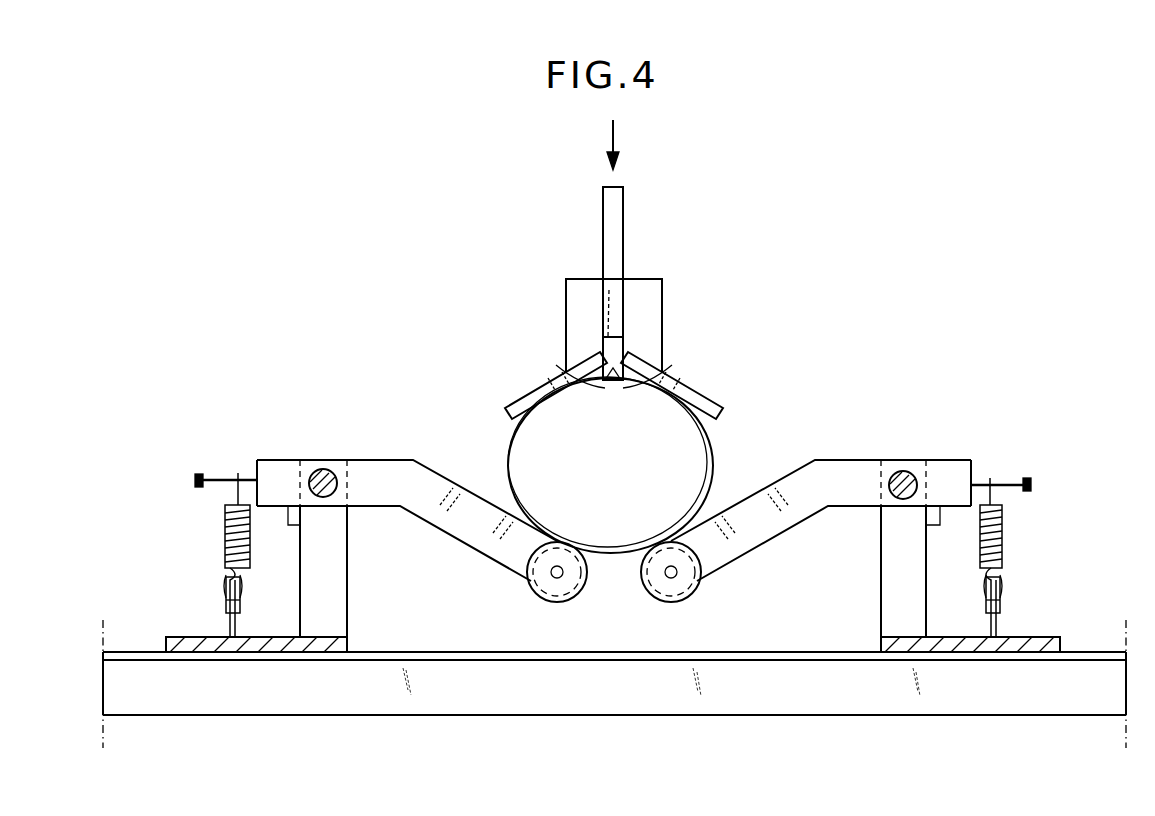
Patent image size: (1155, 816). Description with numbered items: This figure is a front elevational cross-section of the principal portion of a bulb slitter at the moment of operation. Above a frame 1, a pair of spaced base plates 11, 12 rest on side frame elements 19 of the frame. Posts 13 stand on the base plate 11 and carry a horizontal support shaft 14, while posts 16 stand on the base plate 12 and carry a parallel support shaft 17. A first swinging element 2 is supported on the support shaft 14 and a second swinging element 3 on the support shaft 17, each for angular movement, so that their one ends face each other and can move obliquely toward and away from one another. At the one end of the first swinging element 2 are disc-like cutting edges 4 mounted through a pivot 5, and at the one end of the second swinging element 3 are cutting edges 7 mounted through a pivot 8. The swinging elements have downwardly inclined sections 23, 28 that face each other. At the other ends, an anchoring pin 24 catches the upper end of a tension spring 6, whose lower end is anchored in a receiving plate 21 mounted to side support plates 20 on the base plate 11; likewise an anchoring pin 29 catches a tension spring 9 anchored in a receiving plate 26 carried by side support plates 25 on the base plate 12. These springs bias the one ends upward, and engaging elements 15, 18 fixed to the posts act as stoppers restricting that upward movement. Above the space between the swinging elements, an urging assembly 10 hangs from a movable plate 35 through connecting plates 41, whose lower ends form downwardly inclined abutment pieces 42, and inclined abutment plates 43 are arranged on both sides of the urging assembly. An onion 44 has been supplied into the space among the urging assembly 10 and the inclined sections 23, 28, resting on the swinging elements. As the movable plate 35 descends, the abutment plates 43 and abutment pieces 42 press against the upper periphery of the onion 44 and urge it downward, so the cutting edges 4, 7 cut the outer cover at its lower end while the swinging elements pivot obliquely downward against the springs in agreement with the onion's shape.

The frame 1 is at (451, 727).
The first swinging element 2 is at (386, 460).
The second swinging element 3 is at (823, 461).
The disc-like cutting edge 4 is at (567, 601).
The pivot 5 is at (554, 580).
The tension spring 6 is at (225, 538).
The disc-like cutting edge 7 is at (660, 594).
The pivot 8 is at (676, 576).
The tension spring 9 is at (1002, 535).
The urging assembly 10 is at (623, 370).
The base plate 11 is at (205, 648).
The base plate 12 is at (1020, 650).
The post 13 is at (337, 588).
The support shaft 14 is at (323, 469).
The engaging element 15 is at (287, 508).
The post 16 is at (888, 597).
The support shaft 17 is at (902, 471).
The engaging element 18 is at (941, 520).
The side frame element 19 is at (750, 705).
The side support plate 20 is at (227, 606).
The receiving plate 21 is at (242, 602).
The downwardly inclined section 23 is at (460, 532).
The anchoring pin 24 is at (214, 478).
The side support plate 25 is at (1000, 600).
The receiving plate 26 is at (987, 607).
The downwardly inclined section 28 is at (778, 534).
The anchoring pin 29 is at (1010, 480).
The movable plate 35 is at (626, 200).
The connecting plate 41 is at (566, 300).
The abutment piece 42 is at (557, 378).
The abutment plate 43 is at (515, 408).
The onion 44 is at (716, 455).